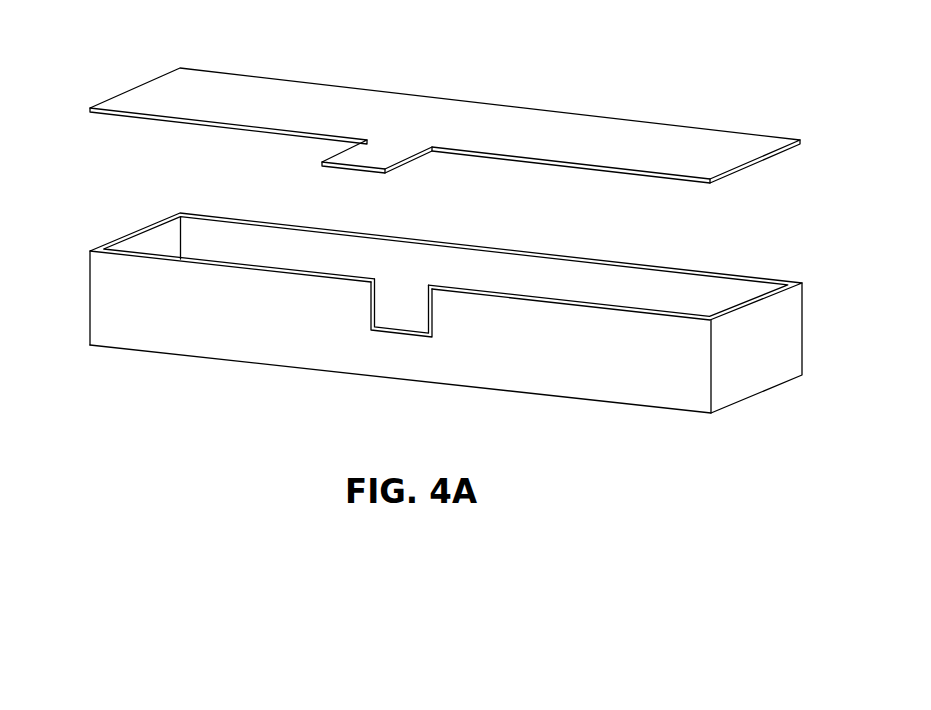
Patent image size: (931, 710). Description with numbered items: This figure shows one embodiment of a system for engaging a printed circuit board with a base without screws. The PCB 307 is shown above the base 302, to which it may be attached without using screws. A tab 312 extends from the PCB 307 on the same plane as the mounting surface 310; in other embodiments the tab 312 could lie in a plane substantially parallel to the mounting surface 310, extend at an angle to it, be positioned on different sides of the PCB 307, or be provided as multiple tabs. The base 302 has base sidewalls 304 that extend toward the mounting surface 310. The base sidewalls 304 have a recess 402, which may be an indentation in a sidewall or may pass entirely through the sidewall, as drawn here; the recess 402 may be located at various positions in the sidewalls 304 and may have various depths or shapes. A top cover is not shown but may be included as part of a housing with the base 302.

The base 302 is at (207, 361).
The base sidewalls 304 is at (627, 395).
The PCB 307 is at (770, 142).
The mounting surface 310 is at (598, 168).
The tab 312 is at (367, 157).
The recess 402 is at (370, 315).